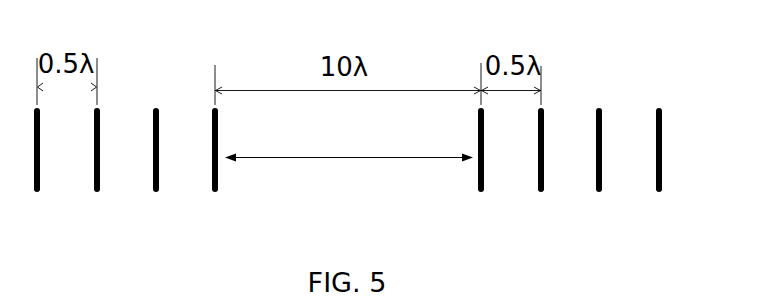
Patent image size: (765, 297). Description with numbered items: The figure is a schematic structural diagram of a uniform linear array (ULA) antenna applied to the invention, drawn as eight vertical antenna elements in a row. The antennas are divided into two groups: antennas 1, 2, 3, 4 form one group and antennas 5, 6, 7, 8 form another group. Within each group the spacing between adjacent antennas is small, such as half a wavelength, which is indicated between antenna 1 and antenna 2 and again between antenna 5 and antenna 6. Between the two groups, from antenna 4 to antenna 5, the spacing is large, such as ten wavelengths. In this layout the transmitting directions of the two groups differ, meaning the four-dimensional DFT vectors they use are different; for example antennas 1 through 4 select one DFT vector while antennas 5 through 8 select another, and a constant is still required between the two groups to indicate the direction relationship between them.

The antenna 1 is at (37, 163).
The antenna 2 is at (97, 163).
The antenna 3 is at (156, 163).
The antenna 4 is at (215, 163).
The antenna 5 is at (481, 163).
The antenna 6 is at (541, 163).
The antenna 7 is at (599, 163).
The antenna 8 is at (659, 163).